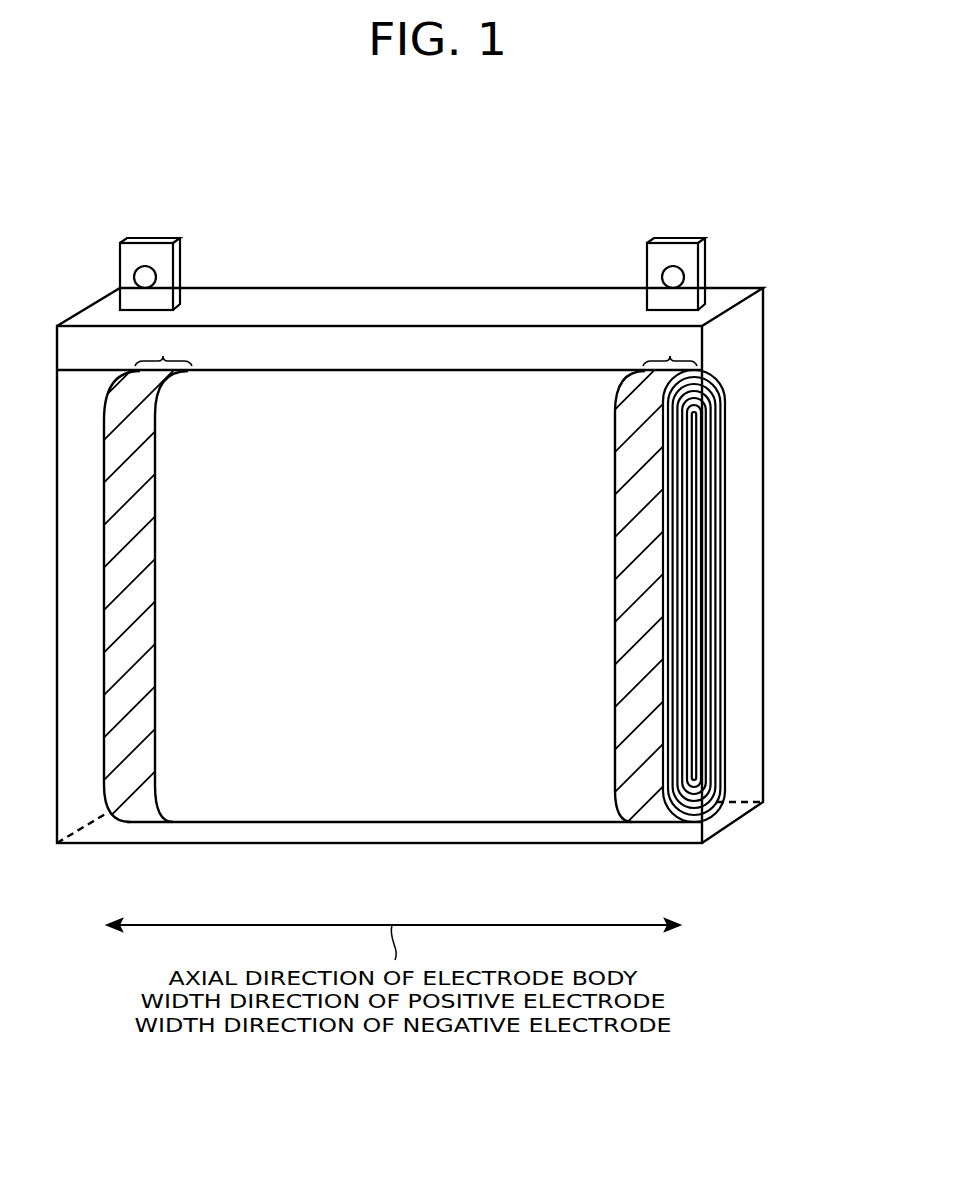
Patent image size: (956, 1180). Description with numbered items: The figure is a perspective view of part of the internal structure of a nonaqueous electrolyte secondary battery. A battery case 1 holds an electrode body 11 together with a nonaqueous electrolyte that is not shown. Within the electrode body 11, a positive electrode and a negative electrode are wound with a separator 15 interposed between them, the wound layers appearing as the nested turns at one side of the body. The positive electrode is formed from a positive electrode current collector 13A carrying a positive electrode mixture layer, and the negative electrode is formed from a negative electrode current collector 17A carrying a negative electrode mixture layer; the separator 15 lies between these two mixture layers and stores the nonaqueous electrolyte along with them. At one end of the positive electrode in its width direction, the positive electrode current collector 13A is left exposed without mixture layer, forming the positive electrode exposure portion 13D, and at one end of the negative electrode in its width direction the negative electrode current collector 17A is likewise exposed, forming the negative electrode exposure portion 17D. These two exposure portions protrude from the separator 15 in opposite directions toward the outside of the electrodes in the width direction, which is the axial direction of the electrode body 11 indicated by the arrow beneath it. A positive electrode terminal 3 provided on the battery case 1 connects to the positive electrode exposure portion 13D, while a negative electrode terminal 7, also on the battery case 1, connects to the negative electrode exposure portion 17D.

The battery case 1 is at (747, 343).
The positive electrode terminal 3 is at (145, 255).
The negative electrode terminal 7 is at (671, 255).
The electrode body 11 is at (400, 560).
The positive electrode current collector 13A is at (133, 807).
The positive electrode exposure portion 13D is at (163, 356).
The separator 15 is at (412, 803).
The negative electrode current collector 17A is at (643, 802).
The negative electrode exposure portion 17D is at (670, 356).